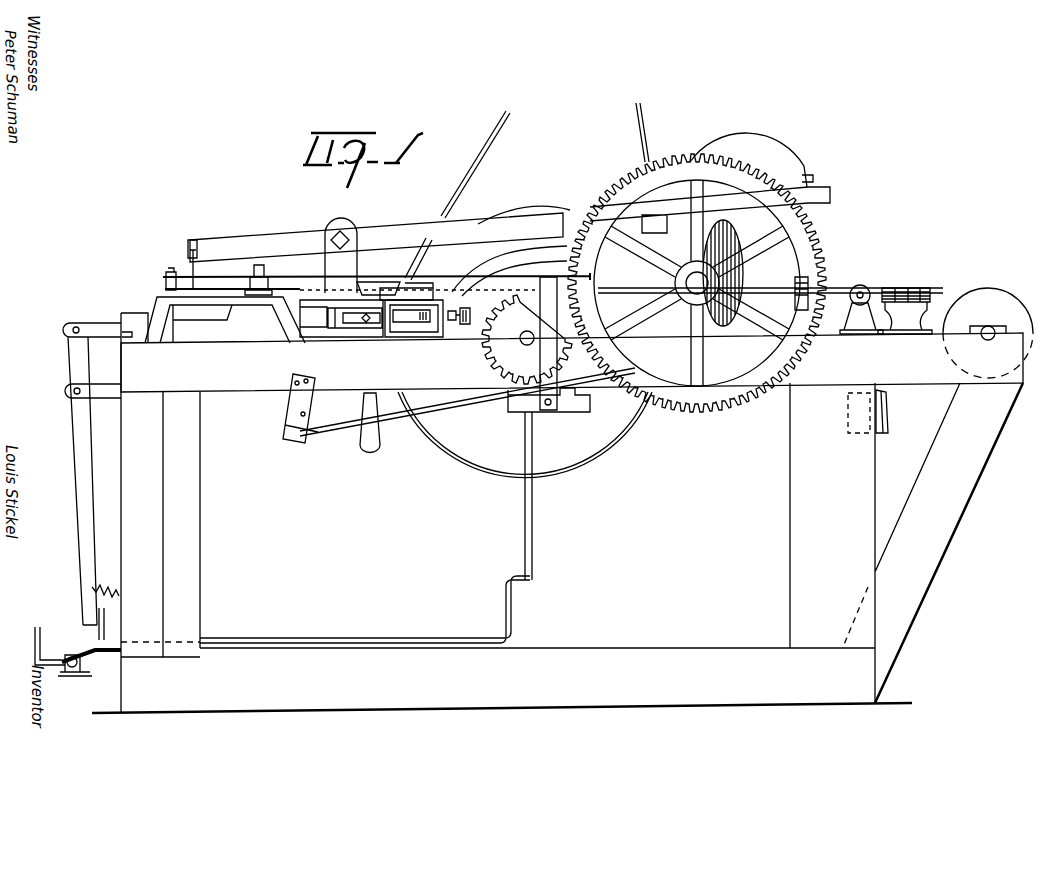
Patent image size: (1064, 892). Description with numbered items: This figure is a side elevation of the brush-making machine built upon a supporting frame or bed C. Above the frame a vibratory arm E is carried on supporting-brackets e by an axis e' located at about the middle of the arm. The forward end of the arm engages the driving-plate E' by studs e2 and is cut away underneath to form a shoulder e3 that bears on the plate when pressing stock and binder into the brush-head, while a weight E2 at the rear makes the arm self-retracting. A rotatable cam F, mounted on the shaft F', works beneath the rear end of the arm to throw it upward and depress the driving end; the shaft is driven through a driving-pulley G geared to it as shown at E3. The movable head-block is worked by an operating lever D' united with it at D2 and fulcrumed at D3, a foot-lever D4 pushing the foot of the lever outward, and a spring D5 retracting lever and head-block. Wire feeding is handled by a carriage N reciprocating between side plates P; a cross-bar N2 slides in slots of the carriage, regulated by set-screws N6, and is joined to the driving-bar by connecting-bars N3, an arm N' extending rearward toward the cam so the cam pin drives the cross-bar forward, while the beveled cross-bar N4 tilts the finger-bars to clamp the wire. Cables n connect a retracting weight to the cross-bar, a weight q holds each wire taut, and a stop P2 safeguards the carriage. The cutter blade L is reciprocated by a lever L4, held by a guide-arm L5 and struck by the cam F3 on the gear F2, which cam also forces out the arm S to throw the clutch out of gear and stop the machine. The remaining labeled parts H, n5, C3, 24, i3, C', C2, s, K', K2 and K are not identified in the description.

The supporting frame C is at (557, 513).
The post on frame H is at (125, 318).
The plate n5 is at (890, 432).
The union of lever and head-block D2 is at (64, 330).
The fulcrum of lever D3 is at (66, 393).
The operating lever D' is at (74, 481).
The spring D5 is at (105, 605).
The foot-lever D4 is at (52, 646).
The treadle rod C3 is at (395, 624).
The cutter blade L is at (248, 292).
The bolt 24 is at (265, 280).
The bolt i3 is at (162, 279).
The driving-plate E' is at (376, 279).
The studs e2 is at (184, 254).
The shoulder e3 is at (196, 252).
The vibratory arm E is at (510, 182).
The supporting-brackets e is at (341, 255).
The axis e' is at (352, 226).
The weight E2 is at (751, 160).
The arm N' is at (462, 270).
The cross-bar N4 is at (421, 288).
The lever L4 is at (450, 260).
The connecting-bars N3 is at (406, 288).
The side plates P is at (351, 333).
The carriage N is at (414, 328).
The cross-bar N2 is at (415, 323).
The set-screws N6 is at (459, 321).
The stop P2 is at (527, 339).
The pivot C' is at (519, 333).
The guide-arm L5 is at (548, 343).
The gearing E3 is at (549, 385).
The arm S is at (440, 400).
The weight q is at (376, 423).
The driving-pulley G is at (525, 435).
The connecting rod C2 is at (538, 496).
The cam F is at (697, 283).
The shaft F' is at (697, 274).
The gear F2 is at (734, 367).
The pulley s is at (741, 292).
The cam F3 is at (804, 282).
The shaft K' is at (777, 281).
The cables n is at (856, 289).
The bearing pedestal K2 is at (900, 288).
The pulley wheel K is at (988, 333).